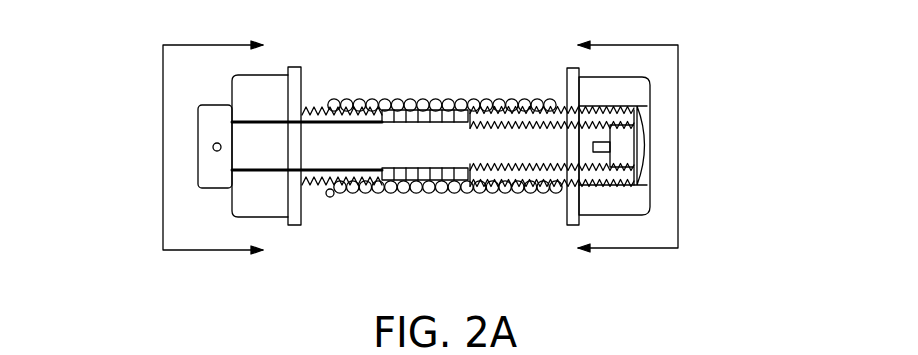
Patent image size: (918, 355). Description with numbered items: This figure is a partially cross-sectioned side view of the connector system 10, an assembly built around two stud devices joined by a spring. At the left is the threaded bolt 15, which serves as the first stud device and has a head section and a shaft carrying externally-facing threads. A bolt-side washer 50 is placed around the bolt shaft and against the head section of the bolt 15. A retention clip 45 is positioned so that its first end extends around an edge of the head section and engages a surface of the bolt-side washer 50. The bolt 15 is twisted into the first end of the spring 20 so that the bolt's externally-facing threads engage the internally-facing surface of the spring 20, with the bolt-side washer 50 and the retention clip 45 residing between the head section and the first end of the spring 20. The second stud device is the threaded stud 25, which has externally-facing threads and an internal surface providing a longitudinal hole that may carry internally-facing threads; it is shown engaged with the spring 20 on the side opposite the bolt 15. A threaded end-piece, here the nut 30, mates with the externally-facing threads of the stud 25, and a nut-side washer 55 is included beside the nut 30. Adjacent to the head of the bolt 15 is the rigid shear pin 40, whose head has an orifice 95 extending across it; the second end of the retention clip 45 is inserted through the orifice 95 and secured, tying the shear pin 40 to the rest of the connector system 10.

The connector system 10 is at (433, 134).
The threaded bolt 15 is at (232, 217).
The spring 20 is at (487, 120).
The threaded stud 25 is at (627, 177).
The nut 30 is at (653, 93).
The rigid shear pin 40 is at (197, 125).
The retention clip 45 is at (334, 197).
The bolt-side washer 50 is at (303, 66).
The nut-side washer 55 is at (565, 86).
The orifice 95 is at (208, 149).